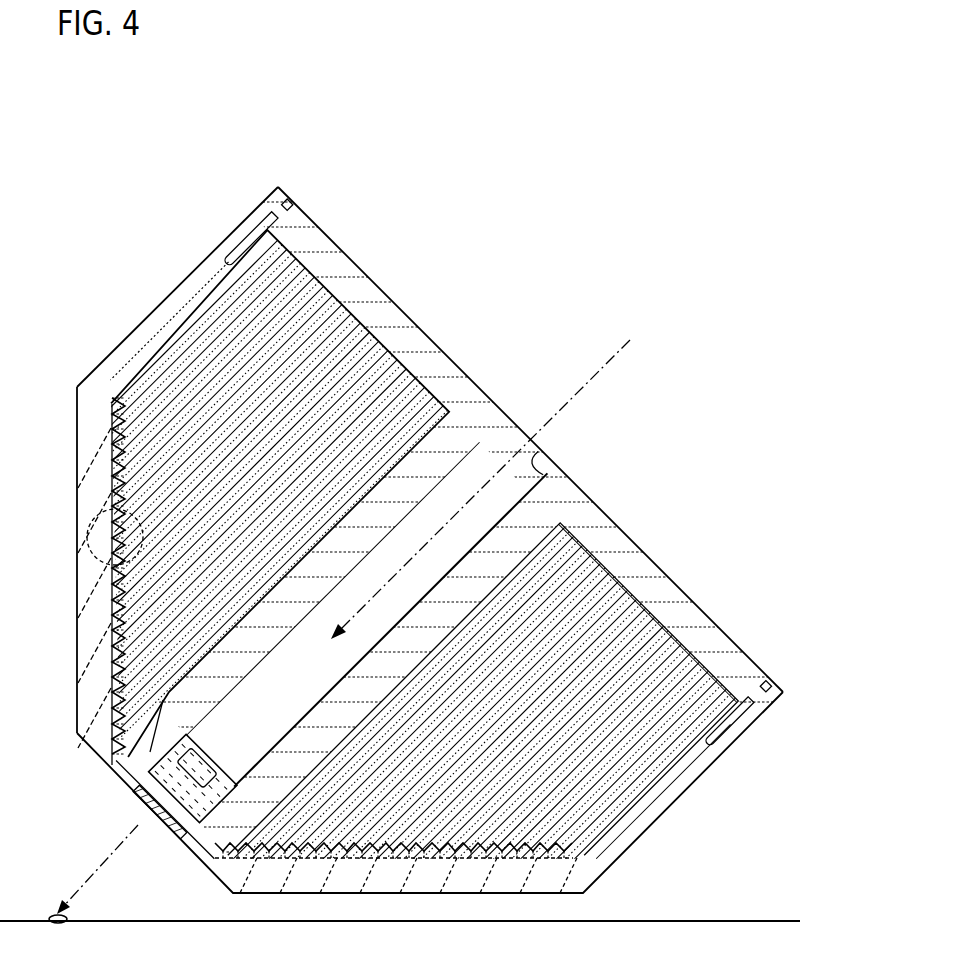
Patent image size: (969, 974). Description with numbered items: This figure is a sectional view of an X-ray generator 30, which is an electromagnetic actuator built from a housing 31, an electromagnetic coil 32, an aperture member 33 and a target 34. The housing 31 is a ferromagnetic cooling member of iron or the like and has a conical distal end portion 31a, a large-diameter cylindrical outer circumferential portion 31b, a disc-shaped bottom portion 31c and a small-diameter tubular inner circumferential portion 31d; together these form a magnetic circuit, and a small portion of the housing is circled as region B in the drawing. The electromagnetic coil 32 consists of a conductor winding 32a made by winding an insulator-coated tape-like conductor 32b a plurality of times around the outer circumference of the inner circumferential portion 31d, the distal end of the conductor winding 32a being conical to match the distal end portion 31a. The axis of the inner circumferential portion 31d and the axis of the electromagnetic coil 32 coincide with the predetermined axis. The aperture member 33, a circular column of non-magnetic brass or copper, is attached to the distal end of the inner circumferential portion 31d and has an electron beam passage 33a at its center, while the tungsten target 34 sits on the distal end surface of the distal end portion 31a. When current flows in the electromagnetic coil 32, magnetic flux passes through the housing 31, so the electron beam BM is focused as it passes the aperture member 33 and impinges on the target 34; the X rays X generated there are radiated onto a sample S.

The X-ray generator 30 is at (432, 187).
The housing 31 is at (362, 270).
The conical distal end portion 31a is at (77, 492).
The outer circumferential portion 31b is at (120, 345).
The bottom portion 31c is at (410, 318).
The inner circumferential portion 31d is at (540, 462).
The electromagnetic coil 32 is at (183, 326).
The conductor winding 32a is at (744, 508).
The tape-like conductor 32b is at (646, 528).
The aperture member 33 is at (150, 779).
The electron beam passage 33a is at (240, 761).
The target 34 is at (144, 805).
The region B is at (94, 546).
The electron beam BM is at (638, 352).
The optical axis X is at (102, 872).
The sample S is at (58, 915).